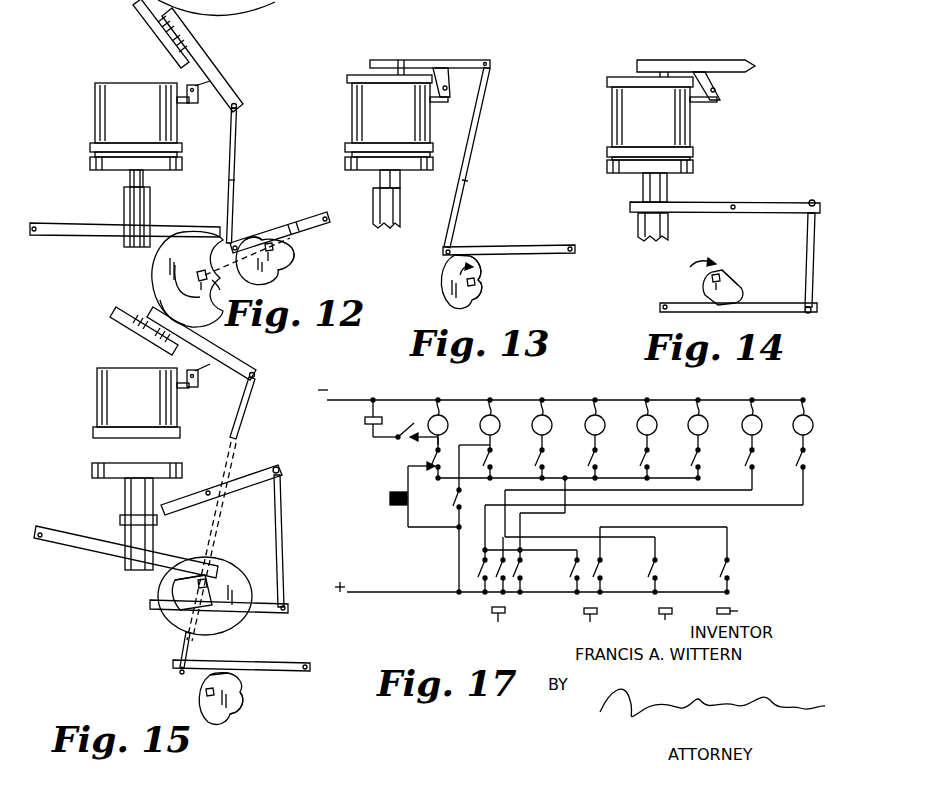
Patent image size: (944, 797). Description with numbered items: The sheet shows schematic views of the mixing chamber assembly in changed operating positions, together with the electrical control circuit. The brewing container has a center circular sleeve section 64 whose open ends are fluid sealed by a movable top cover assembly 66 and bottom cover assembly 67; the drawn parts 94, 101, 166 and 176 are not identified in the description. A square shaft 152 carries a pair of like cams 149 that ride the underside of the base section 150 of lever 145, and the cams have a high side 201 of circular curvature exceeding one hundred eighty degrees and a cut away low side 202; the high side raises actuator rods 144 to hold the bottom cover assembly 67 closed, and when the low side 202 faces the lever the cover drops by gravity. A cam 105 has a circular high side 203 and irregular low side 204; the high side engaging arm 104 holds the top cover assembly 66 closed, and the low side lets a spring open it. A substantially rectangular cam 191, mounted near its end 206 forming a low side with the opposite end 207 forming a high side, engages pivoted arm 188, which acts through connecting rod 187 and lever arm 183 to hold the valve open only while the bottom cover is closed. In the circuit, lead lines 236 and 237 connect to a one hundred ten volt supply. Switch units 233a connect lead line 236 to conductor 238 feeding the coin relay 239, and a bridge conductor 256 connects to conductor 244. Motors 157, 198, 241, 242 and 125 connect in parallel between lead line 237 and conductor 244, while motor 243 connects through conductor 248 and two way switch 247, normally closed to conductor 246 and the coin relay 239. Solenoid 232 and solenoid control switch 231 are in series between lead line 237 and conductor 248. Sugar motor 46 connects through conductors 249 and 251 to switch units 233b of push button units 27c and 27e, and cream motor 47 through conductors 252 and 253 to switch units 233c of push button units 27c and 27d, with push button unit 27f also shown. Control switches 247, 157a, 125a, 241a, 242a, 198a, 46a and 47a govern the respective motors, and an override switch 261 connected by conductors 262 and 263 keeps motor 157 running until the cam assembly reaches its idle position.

In FIG. 12, the top cover assembly 66 is at (138, 33).
In FIG. 13, the top cover assembly 66 is at (332, 74).
In FIG. 15, the top cover assembly 66 is at (113, 325).
In FIG. 12, the pivoted lever plate 94 is at (205, 66).
In FIG. 13, the pivoted lever plate 94 is at (407, 64).
In FIG. 14, the pivoted lever plate 94 is at (713, 68).
In FIG. 15, the pivoted lever plate 94 is at (212, 353).
In FIG. 12, the center circular sleeve section 64 is at (112, 115).
In FIG. 13, the center circular sleeve section 64 is at (355, 108).
In FIG. 14, the center circular sleeve section 64 is at (625, 107).
In FIG. 15, the center circular sleeve section 64 is at (110, 390).
In FIG. 12, the bottom cover assembly 67 is at (84, 160).
In FIG. 13, the bottom cover assembly 67 is at (330, 167).
In FIG. 14, the bottom cover assembly 67 is at (713, 155).
In FIG. 15, the bottom cover assembly 67 is at (78, 468).
In FIG. 12, the link rod 101 is at (236, 150).
In FIG. 13, the link rod 101 is at (476, 133).
In FIG. 15, the link rod 101 is at (247, 413).
In FIG. 12, the lever arm 145 is at (72, 225).
In FIG. 15, the lever arm 145 is at (100, 550).
In FIG. 12, the shaft sleeve 176 is at (125, 197).
In FIG. 13, the shaft sleeve 176 is at (380, 203).
In FIG. 14, the shaft sleeve 176 is at (652, 182).
In FIG. 15, the shaft sleeve 176 is at (123, 532).
In FIG. 12, the actuator rods 144 is at (143, 193).
In FIG. 15, the actuator rods 144 is at (120, 490).
In FIG. 12, the base section 150 is at (173, 227).
In FIG. 12, the shaft 152 is at (180, 257).
In FIG. 13, the shaft 152 is at (485, 275).
In FIG. 14, the shaft 152 is at (727, 272).
In FIG. 15, the shaft 152 is at (203, 580).
In FIG. 12, the cams 149 is at (157, 268).
In FIG. 15, the cams 149 is at (237, 573).
In FIG. 12, the high side 201 is at (153, 287).
In FIG. 12, the low side 202 is at (212, 283).
In FIG. 12, the low side 204 is at (287, 230).
In FIG. 13, the low side 204 is at (485, 285).
In FIG. 15, the low side 204 is at (203, 690).
In FIG. 12, the cam 105 is at (295, 248).
In FIG. 13, the cam 105 is at (443, 268).
In FIG. 15, the cam 105 is at (235, 692).
In FIG. 12, the high side 203 is at (297, 278).
In FIG. 13, the high side 203 is at (442, 295).
In FIG. 15, the high side 203 is at (235, 718).
In FIG. 13, the shaft 166 is at (402, 180).
In FIG. 12, the arm 104 is at (267, 243).
In FIG. 13, the arm 104 is at (502, 248).
In FIG. 15, the arm 104 is at (273, 662).
In FIG. 14, the lever arm 183 is at (717, 203).
In FIG. 15, the lever arm 183 is at (193, 497).
In FIG. 14, the connecting rod 187 is at (806, 228).
In FIG. 15, the connecting rod 187 is at (285, 500).
In FIG. 14, the cam 191 is at (737, 295).
In FIG. 15, the cam 191 is at (173, 592).
In FIG. 14, the end 206 is at (685, 267).
In FIG. 14, the high side 207 is at (733, 302).
In FIG. 15, the high side 207 is at (170, 600).
In FIG. 14, the pivoted arm 188 is at (670, 303).
In FIG. 15, the pivoted arm 188 is at (263, 608).
In FIG. 17, the motor 243 is at (438, 400).
In FIG. 17, the electric motor 157 is at (490, 400).
In FIG. 17, the lead line 237 is at (530, 400).
In FIG. 17, the motor 125 is at (545, 401).
In FIG. 17, the motor 241 is at (597, 400).
In FIG. 17, the motor 242 is at (648, 400).
In FIG. 17, the motor 198 is at (700, 400).
In FIG. 17, the motor 46 is at (753, 400).
In FIG. 17, the motor 47 is at (804, 400).
In FIG. 17, the solenoid control switch 231 is at (415, 418).
In FIG. 17, the solenoid 232 is at (365, 420).
In FIG. 17, the two way switch unit 247 is at (445, 455).
In FIG. 17, the conductor 248 is at (437, 445).
In FIG. 17, the conductor 246 is at (408, 475).
In FIG. 17, the control switch 157a is at (496, 460).
In FIG. 17, the control switch 125a is at (548, 460).
In FIG. 17, the control switch 241a is at (601, 460).
In FIG. 17, the control switch 242a is at (653, 460).
In FIG. 17, the control switch 198a is at (704, 460).
In FIG. 17, the control switch 46a is at (758, 460).
In FIG. 17, the control switch 47a is at (808, 460).
In FIG. 17, the conductor 244 is at (650, 478).
In FIG. 17, the conductor 249 is at (700, 490).
In FIG. 17, the conductor 252 is at (757, 505).
In FIG. 17, the conductor 263 is at (454, 493).
In FIG. 17, the override switch 261 is at (462, 496).
In FIG. 17, the coin relay 239 is at (398, 507).
In FIG. 17, the conductor 262 is at (457, 527).
In FIG. 17, the bridge conductor 256 is at (567, 513).
In FIG. 17, the conductor 251 is at (640, 537).
In FIG. 17, the conductor 238 is at (715, 527).
In FIG. 17, the switch units 233a is at (522, 566).
In FIG. 17, the conductor 253 is at (542, 550).
In FIG. 17, the switch units 233c is at (480, 568).
In FIG. 17, the switch units 233b is at (545, 607).
In FIG. 17, the lead line 236 is at (412, 593).
In FIG. 17, the push button unit 27c is at (497, 622).
In FIG. 17, the push button unit 27d is at (590, 622).
In FIG. 17, the push button unit 27e is at (665, 620).
In FIG. 17, the push button unit 27f is at (742, 605).